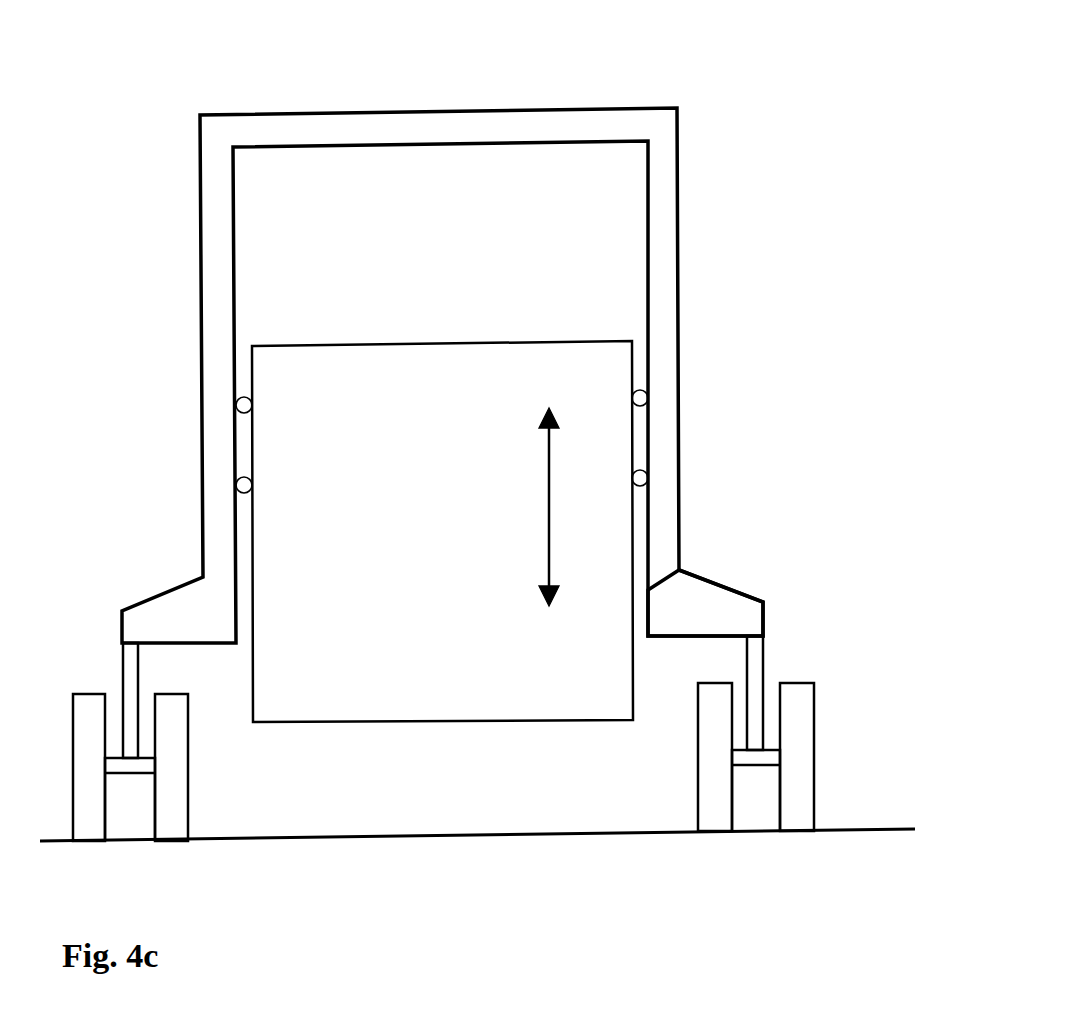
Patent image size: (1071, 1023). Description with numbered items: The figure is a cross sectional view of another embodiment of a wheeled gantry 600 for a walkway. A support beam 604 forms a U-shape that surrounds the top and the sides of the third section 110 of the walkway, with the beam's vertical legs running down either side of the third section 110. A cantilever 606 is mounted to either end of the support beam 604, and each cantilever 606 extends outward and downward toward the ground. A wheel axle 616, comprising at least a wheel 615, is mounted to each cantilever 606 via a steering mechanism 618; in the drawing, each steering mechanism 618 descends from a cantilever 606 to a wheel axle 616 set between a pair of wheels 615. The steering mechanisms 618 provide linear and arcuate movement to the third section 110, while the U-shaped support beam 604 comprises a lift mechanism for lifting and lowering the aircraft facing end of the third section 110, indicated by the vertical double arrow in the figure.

The wheeled gantry 600 is at (836, 74).
The support beam 604 is at (445, 128).
The cantilever 606 is at (697, 603).
The third section 110 is at (445, 375).
The steering mechanism 618 is at (766, 667).
The wheel 615 is at (797, 748).
The wheel axle 616 is at (747, 767).